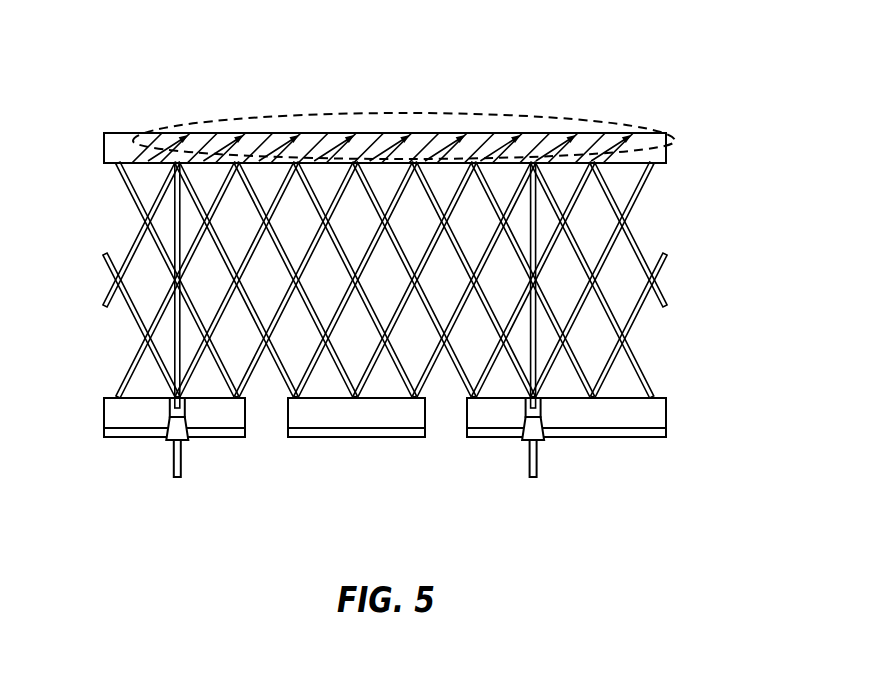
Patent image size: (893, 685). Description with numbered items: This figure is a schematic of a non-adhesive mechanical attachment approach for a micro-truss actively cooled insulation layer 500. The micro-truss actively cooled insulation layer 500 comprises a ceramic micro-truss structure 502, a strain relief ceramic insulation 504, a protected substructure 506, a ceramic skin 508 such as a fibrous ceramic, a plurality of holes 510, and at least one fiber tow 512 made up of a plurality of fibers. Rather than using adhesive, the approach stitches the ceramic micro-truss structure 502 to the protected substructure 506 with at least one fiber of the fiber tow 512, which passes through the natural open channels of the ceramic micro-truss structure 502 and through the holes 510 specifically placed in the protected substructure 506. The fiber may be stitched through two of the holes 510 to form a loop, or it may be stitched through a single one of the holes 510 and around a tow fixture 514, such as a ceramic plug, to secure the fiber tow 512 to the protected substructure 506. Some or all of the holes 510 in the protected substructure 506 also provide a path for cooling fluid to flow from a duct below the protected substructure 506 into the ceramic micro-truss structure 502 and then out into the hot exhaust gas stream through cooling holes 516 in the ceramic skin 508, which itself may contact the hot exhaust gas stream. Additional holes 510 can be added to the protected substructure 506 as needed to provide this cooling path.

The micro-truss actively cooled insulation layer 500 is at (137, 77).
The ceramic micro-truss structure 502 is at (676, 282).
The strain relief ceramic insulation 504 is at (676, 412).
The protected substructure 506 is at (676, 433).
The ceramic skin 508 is at (676, 149).
The holes 510 is at (265, 442).
The fiber tow 512 is at (177, 487).
The tow fixture 514 is at (166, 441).
The cooling holes 516 is at (613, 127).